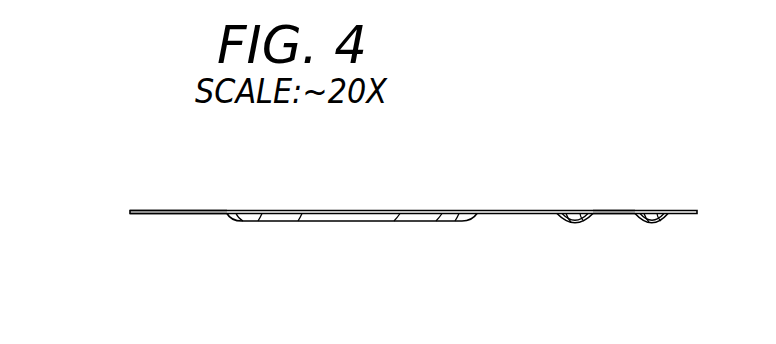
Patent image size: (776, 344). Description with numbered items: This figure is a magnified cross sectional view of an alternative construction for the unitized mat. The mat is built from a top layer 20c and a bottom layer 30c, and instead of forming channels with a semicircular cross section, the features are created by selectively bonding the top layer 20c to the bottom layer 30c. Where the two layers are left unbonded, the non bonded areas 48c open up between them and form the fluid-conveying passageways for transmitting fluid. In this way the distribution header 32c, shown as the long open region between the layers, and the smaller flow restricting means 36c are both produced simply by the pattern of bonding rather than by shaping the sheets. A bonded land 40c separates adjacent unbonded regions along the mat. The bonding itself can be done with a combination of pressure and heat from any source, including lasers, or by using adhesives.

The top layer 20c is at (192, 210).
The bottom layer 30c is at (208, 214).
The distribution header 32c is at (332, 219).
The non bonded areas 48c is at (573, 210).
The land between dimples 40c is at (613, 210).
The flow restricting means 36c is at (645, 221).